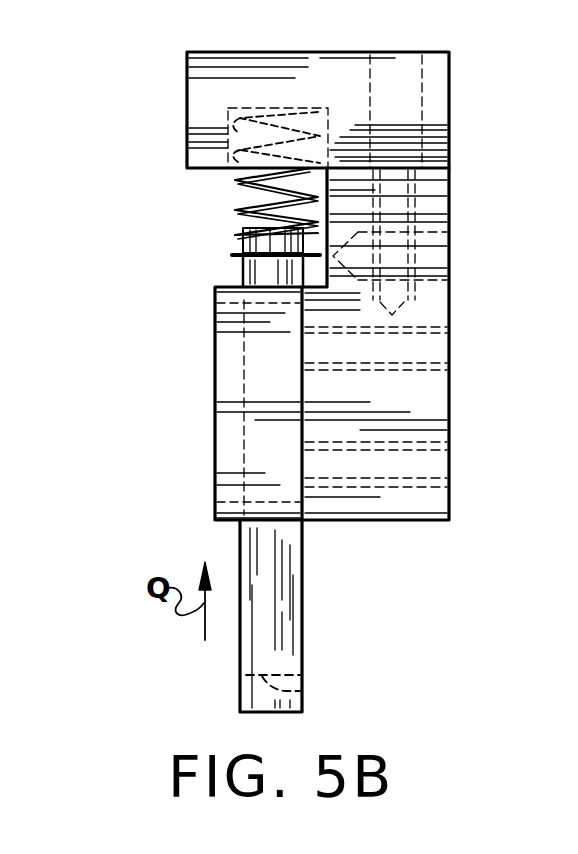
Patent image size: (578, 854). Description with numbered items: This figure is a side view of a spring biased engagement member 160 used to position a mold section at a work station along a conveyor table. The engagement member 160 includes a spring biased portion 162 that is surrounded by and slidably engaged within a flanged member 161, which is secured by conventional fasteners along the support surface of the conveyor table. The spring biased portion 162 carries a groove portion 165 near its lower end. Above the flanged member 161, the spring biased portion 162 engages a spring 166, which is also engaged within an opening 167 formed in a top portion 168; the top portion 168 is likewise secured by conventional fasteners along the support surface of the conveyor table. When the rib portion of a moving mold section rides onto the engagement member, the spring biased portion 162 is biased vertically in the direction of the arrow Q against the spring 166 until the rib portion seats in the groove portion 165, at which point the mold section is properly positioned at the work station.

The engagement member 160 is at (152, 75).
The flanged member 161 is at (232, 346).
The spring biased portion 162 is at (300, 580).
The groove portion 165 is at (300, 692).
The spring 166 is at (236, 226).
The opening 167 is at (225, 148).
The top portion 168 is at (437, 113).